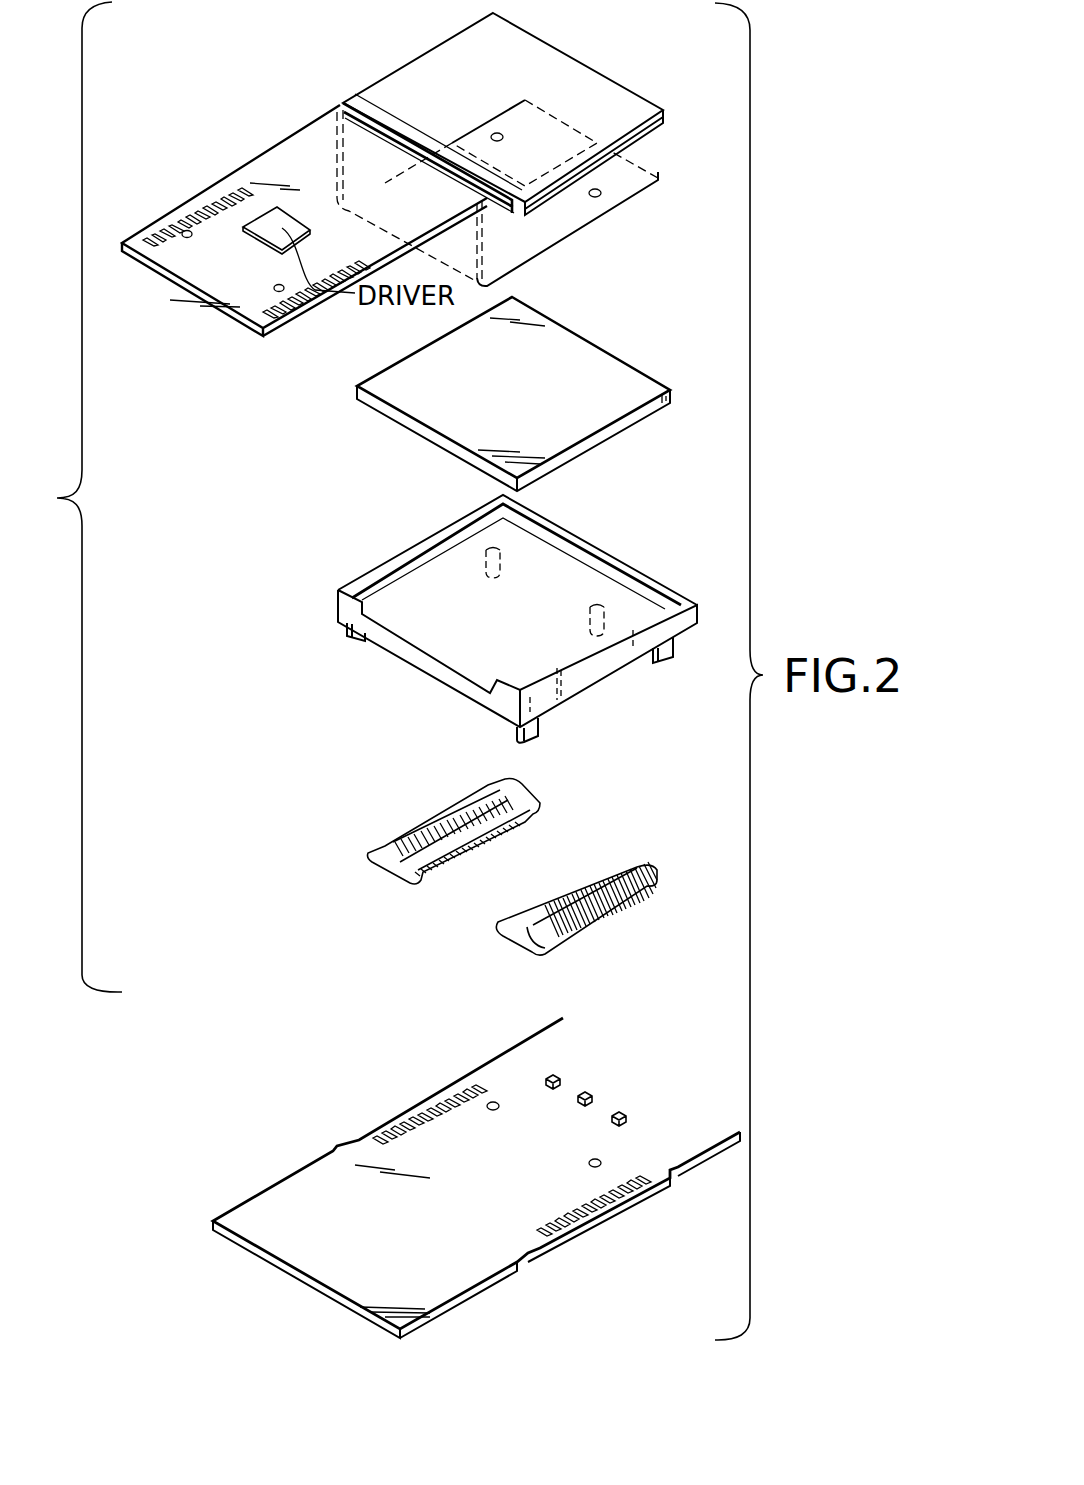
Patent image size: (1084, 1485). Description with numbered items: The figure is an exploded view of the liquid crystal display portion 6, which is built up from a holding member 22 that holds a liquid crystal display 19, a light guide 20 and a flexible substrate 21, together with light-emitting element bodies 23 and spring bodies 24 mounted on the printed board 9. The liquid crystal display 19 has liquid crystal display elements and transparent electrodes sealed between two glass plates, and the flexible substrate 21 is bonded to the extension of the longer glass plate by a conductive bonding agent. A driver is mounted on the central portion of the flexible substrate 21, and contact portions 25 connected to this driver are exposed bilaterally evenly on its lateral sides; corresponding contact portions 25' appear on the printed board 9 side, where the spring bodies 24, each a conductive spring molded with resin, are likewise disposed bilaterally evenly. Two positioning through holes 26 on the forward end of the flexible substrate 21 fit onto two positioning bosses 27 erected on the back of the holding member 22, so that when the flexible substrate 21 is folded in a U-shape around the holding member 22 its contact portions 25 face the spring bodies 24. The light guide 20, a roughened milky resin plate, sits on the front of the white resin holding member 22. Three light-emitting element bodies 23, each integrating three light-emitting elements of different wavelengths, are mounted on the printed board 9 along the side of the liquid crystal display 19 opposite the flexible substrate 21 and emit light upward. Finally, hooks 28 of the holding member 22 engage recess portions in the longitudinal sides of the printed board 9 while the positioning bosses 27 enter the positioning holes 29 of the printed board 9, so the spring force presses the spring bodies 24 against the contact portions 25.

The liquid crystal display portion 6 is at (78, 497).
The printed board 9 is at (437, 1282).
The liquid crystal display 19 is at (570, 90).
The light guide 20 is at (555, 360).
The flexible substrate 21 is at (312, 147).
The holding member 22 is at (340, 605).
The light-emitting element bodies 23 is at (621, 1114).
The spring bodies 24 is at (615, 865).
The contact portions 25 is at (256, 225).
The connector pads 25' is at (506, 1173).
The positioning through holes 26 is at (276, 291).
The positioning bosses 27 is at (598, 604).
The hooks 28 is at (665, 655).
The positioning holes 29 is at (489, 1101).